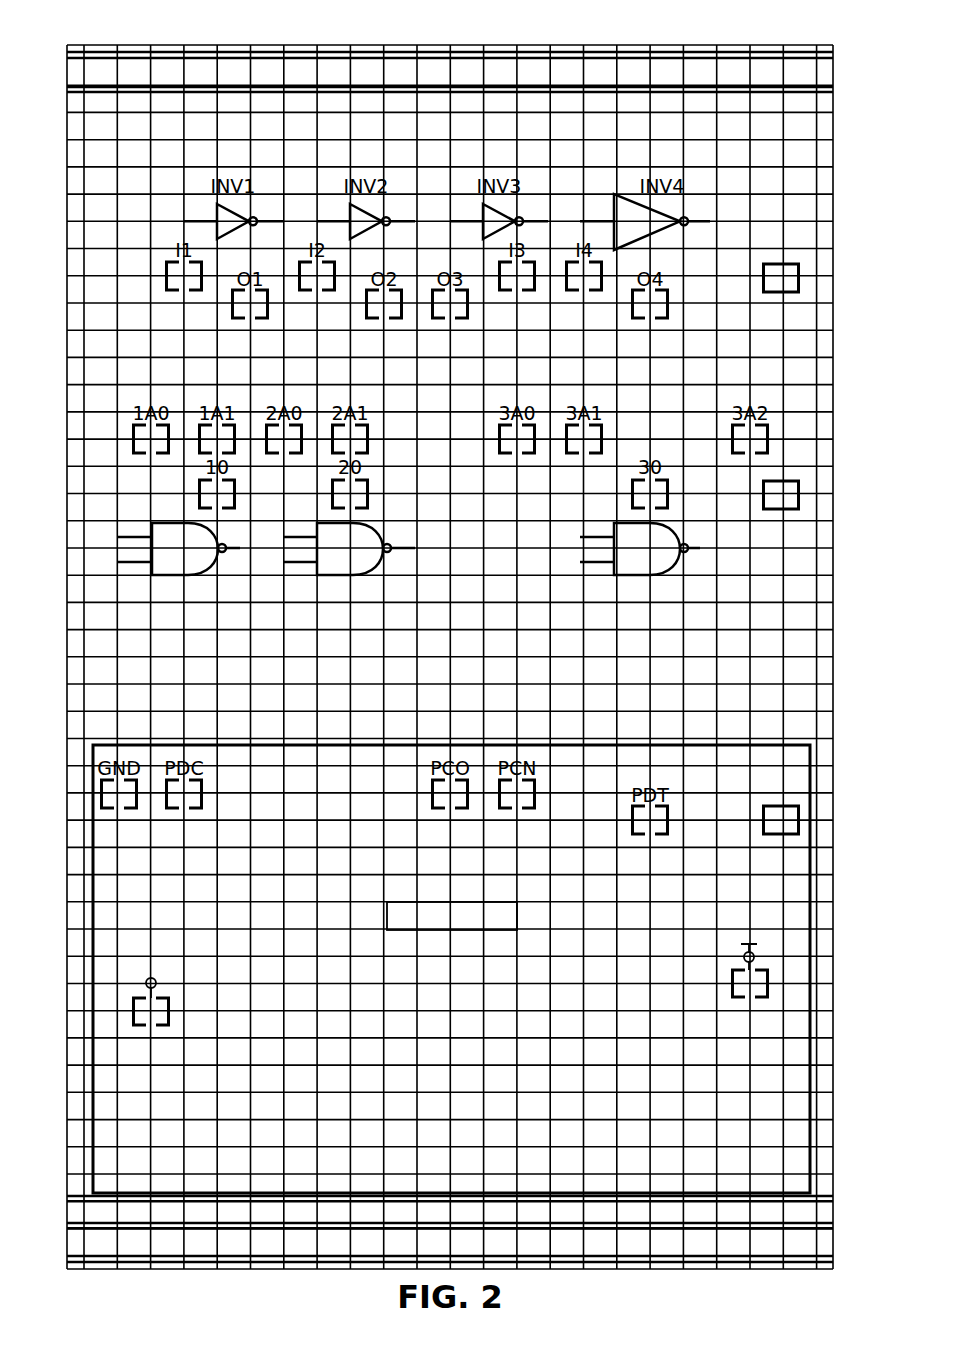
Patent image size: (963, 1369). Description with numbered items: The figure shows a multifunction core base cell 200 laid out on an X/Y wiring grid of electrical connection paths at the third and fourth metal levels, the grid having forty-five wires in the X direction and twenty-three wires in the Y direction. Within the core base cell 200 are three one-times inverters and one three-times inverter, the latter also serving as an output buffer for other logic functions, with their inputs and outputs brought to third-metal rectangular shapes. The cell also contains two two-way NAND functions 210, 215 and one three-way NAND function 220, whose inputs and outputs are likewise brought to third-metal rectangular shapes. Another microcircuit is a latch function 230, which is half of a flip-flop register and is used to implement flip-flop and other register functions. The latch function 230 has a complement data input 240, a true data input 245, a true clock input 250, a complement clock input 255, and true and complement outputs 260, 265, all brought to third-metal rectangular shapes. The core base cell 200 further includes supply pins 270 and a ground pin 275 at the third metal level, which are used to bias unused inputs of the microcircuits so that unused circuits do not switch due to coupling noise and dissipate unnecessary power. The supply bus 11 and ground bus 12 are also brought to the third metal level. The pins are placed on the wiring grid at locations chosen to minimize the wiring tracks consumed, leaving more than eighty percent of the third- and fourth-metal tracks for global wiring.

The multifunction core base cell 200 is at (602, 36).
The VDD bus 11 is at (338, 45).
The GND bus 12 is at (533, 1262).
The two way NAND function 210 is at (162, 577).
The two way NAND function 215 is at (327, 577).
The three way NAND function 220 is at (624, 577).
The latch function 230 is at (490, 902).
The PDC 240 is at (192, 808).
The PDT 245 is at (657, 834).
The PCO 250 is at (457, 808).
The PCN 255 is at (523, 808).
The Q 260 is at (160, 1025).
The QBAR 265 is at (757, 997).
The VDD pins 270 is at (772, 292).
The GND pin 275 is at (126, 808).